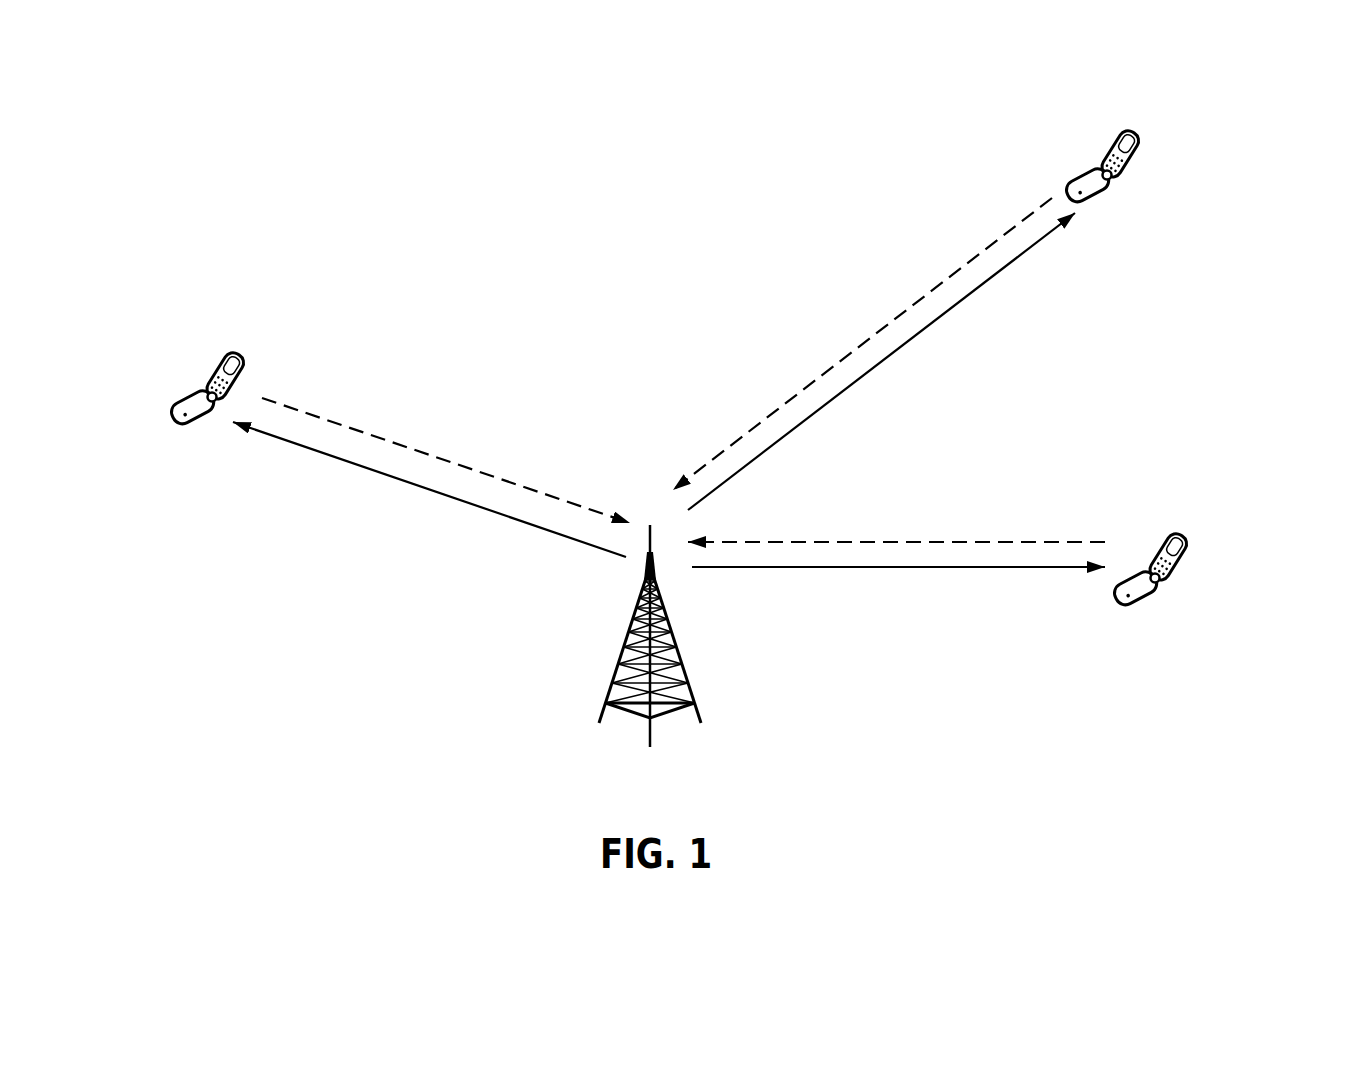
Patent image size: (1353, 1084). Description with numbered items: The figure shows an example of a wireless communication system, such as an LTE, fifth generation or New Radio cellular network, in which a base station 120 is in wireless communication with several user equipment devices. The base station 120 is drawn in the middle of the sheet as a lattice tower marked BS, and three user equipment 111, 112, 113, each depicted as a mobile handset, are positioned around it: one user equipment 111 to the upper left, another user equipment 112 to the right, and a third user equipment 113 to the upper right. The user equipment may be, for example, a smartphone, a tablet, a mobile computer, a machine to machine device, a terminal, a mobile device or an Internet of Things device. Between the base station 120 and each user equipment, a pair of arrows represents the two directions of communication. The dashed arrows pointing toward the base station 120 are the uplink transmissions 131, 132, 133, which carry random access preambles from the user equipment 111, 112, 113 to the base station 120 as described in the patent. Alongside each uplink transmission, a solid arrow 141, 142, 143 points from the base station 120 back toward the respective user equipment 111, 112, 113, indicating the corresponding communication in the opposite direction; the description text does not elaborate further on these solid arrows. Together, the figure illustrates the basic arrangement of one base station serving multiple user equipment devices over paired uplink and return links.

The user equipment 111 is at (187, 358).
The user equipment 112 is at (1188, 572).
The user equipment 113 is at (1138, 167).
The base station 120 is at (718, 728).
The uplink transmission 131 is at (469, 454).
The uplink transmission 132 is at (908, 528).
The uplink transmission 133 is at (865, 330).
The downlink signal 141 is at (445, 497).
The downlink signal 142 is at (978, 568).
The downlink signal 143 is at (993, 280).